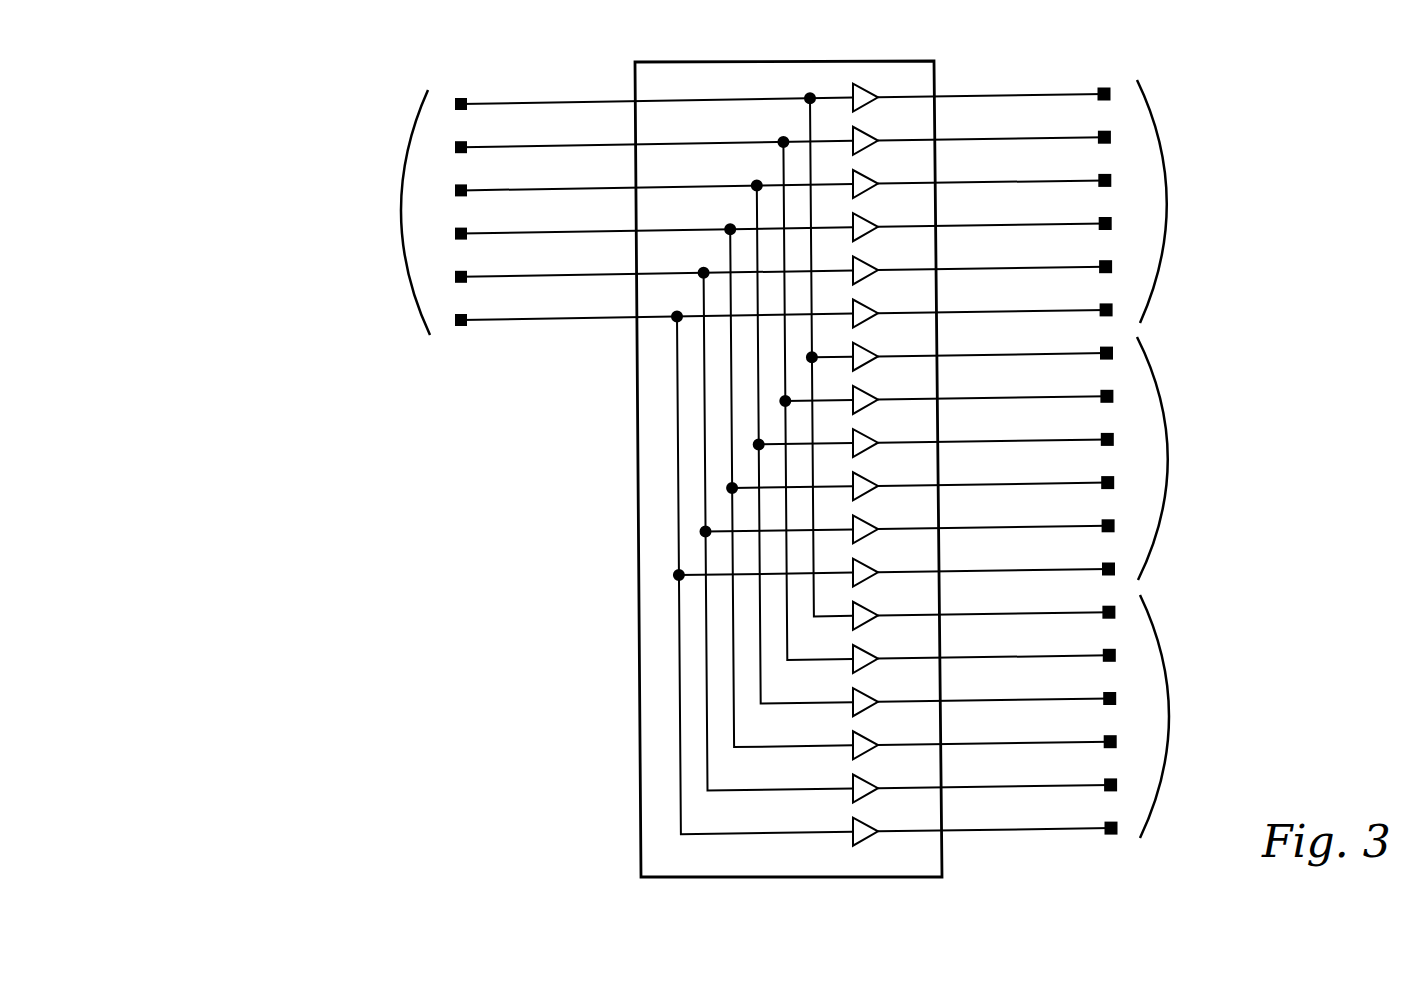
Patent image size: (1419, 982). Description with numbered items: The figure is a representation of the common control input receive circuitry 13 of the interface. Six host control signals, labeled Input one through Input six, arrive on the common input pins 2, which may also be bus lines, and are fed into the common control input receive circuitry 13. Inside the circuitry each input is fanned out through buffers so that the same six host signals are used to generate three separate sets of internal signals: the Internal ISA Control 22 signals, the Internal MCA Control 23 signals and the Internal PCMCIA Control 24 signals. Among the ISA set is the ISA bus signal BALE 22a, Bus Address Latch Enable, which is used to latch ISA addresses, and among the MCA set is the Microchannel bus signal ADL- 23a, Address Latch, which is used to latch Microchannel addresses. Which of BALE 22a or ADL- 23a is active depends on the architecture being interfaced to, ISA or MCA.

The input pins 2 is at (402, 213).
The common control input receive circuitry 13 is at (640, 697).
The Internal ISA Control 22 is at (1134, 197).
The BALE 22a is at (1023, 311).
The Internal MCA Control 23 is at (1134, 455).
The ADL- 23a is at (1023, 570).
The Internal PCMCIA Control 24 is at (1169, 716).